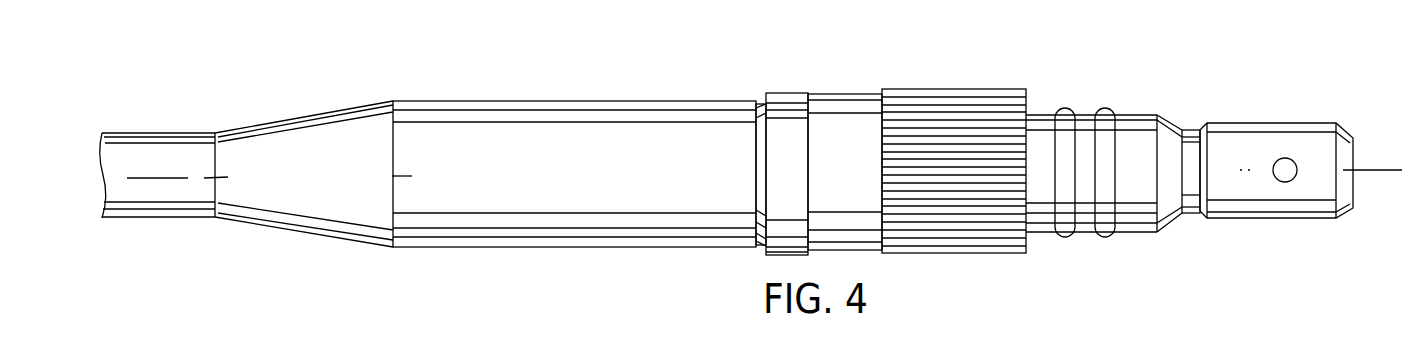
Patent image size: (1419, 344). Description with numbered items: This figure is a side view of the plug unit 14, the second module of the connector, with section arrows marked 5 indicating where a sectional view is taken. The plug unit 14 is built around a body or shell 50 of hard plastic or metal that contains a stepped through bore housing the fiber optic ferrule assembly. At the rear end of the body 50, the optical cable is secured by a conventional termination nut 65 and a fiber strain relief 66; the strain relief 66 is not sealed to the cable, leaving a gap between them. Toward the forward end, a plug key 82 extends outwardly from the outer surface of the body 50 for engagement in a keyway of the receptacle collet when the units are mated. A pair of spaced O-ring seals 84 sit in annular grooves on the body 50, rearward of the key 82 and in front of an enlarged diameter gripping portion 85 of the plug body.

The plug unit 14 is at (882, 71).
The fiber strain relief 66 is at (602, 113).
The termination nut 65 is at (788, 103).
The gripping portion 85 is at (973, 95).
The body 50 is at (1038, 120).
The O-ring seals 84 is at (1067, 215).
The plug key 82 is at (1288, 165).
The section line 5- 5 is at (145, 186).